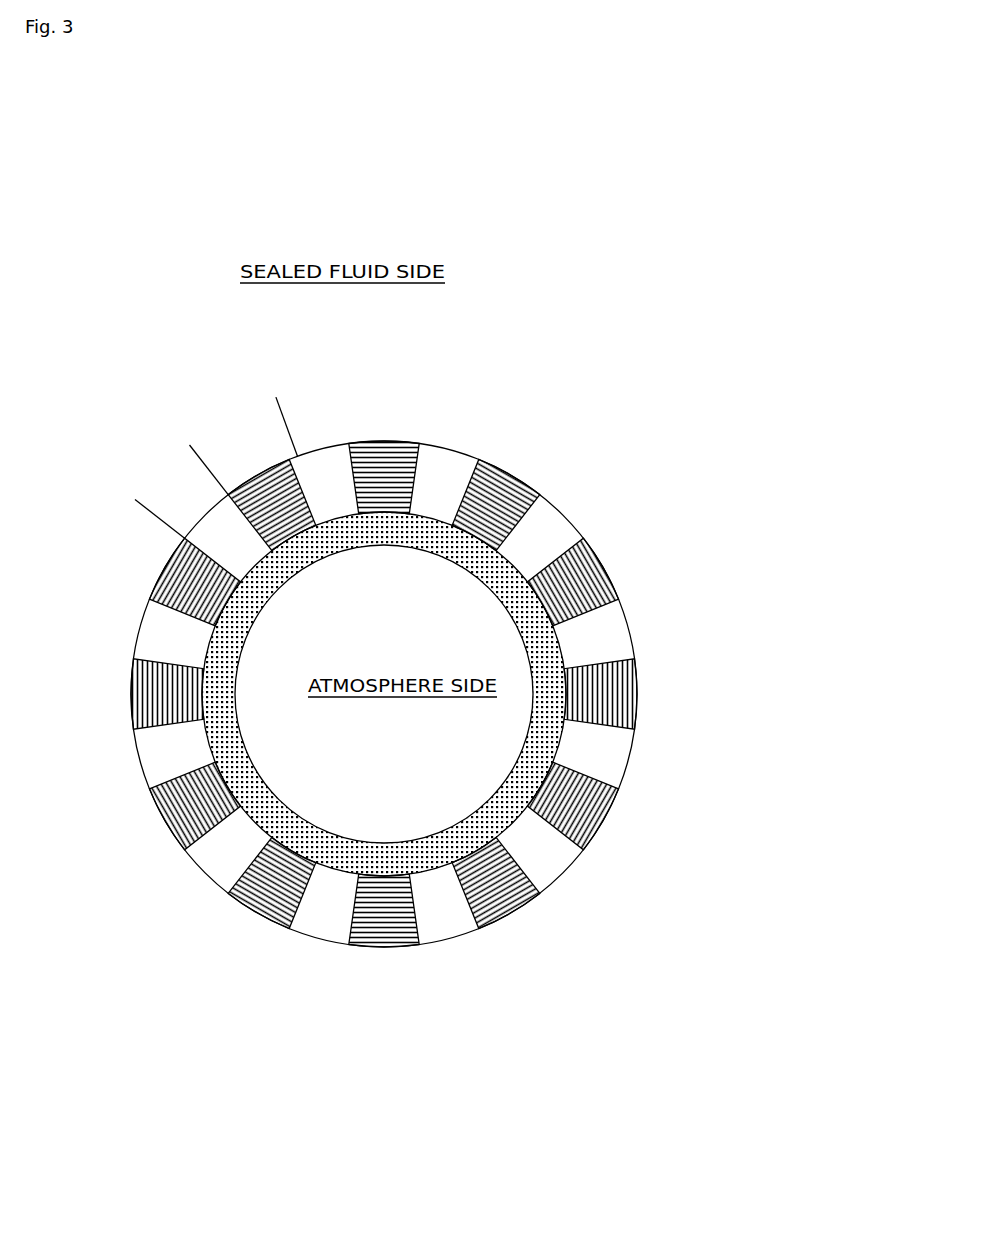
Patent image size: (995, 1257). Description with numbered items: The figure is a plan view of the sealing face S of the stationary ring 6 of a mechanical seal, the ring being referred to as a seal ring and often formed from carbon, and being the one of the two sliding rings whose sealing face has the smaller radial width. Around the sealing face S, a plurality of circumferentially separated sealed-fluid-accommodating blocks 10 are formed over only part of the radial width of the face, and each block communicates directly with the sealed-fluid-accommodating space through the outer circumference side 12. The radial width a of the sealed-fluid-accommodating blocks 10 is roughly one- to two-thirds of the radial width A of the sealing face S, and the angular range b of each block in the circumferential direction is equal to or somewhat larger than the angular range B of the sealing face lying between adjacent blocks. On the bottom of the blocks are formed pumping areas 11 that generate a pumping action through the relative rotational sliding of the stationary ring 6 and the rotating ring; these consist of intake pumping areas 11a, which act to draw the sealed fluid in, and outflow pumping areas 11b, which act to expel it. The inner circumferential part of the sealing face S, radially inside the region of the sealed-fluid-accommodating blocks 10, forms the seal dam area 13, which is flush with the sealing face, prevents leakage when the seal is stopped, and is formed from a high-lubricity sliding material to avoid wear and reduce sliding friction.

The stationary ring 6 is at (437, 446).
The sealed-fluid-accommodating blocks 10 is at (632, 688).
The pumping areas 11 is at (777, 768).
The intake pumping areas 11a is at (507, 487).
The outflow pumping areas 11b is at (392, 448).
The outer circumference side 12 is at (612, 708).
The seal dam area 13 is at (493, 575).
The sealing face S is at (557, 520).
The width of the sealed-fluid-accommodating blocks a is at (323, 448).
The angular range of the sealed-fluid-accommodating blocks b is at (279, 405).
The width of the sealing face A is at (425, 551).
The angular range of the sealing face between adjacent blocks B is at (194, 451).